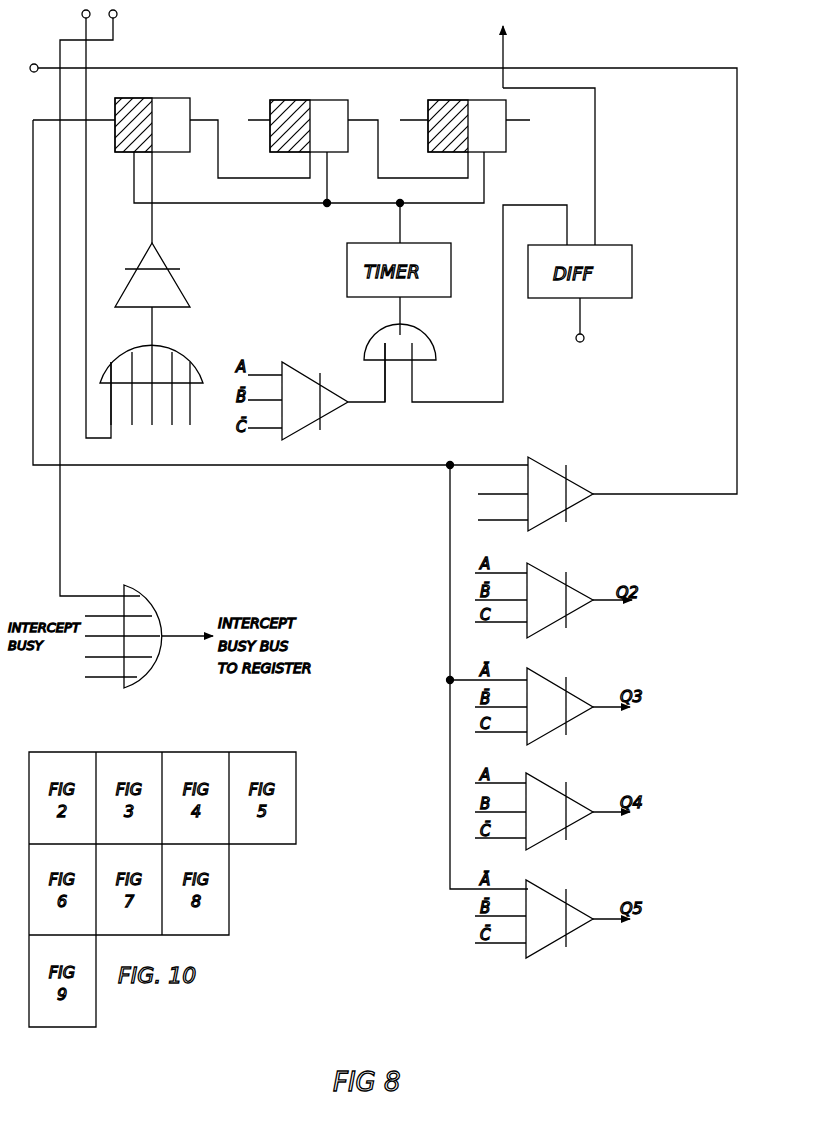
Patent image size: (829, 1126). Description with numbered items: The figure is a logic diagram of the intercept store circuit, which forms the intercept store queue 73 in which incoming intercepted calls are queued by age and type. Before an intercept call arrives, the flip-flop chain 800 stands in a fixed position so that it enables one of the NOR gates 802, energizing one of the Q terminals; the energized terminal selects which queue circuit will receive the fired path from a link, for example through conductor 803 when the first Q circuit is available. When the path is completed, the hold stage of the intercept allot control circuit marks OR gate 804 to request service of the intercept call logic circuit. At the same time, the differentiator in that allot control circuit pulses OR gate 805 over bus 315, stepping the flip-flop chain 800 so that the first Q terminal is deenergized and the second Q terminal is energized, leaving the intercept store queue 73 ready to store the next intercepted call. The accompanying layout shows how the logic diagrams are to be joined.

The bus 315 is at (85, 19).
The conductor 803 is at (40, 74).
The flip-flop chain 800 is at (174, 94).
The OR gate 805 is at (199, 362).
The NOR gates 802 is at (586, 438).
The OR gate 804 is at (140, 674).
The intercept store queue 73 is at (246, 514).